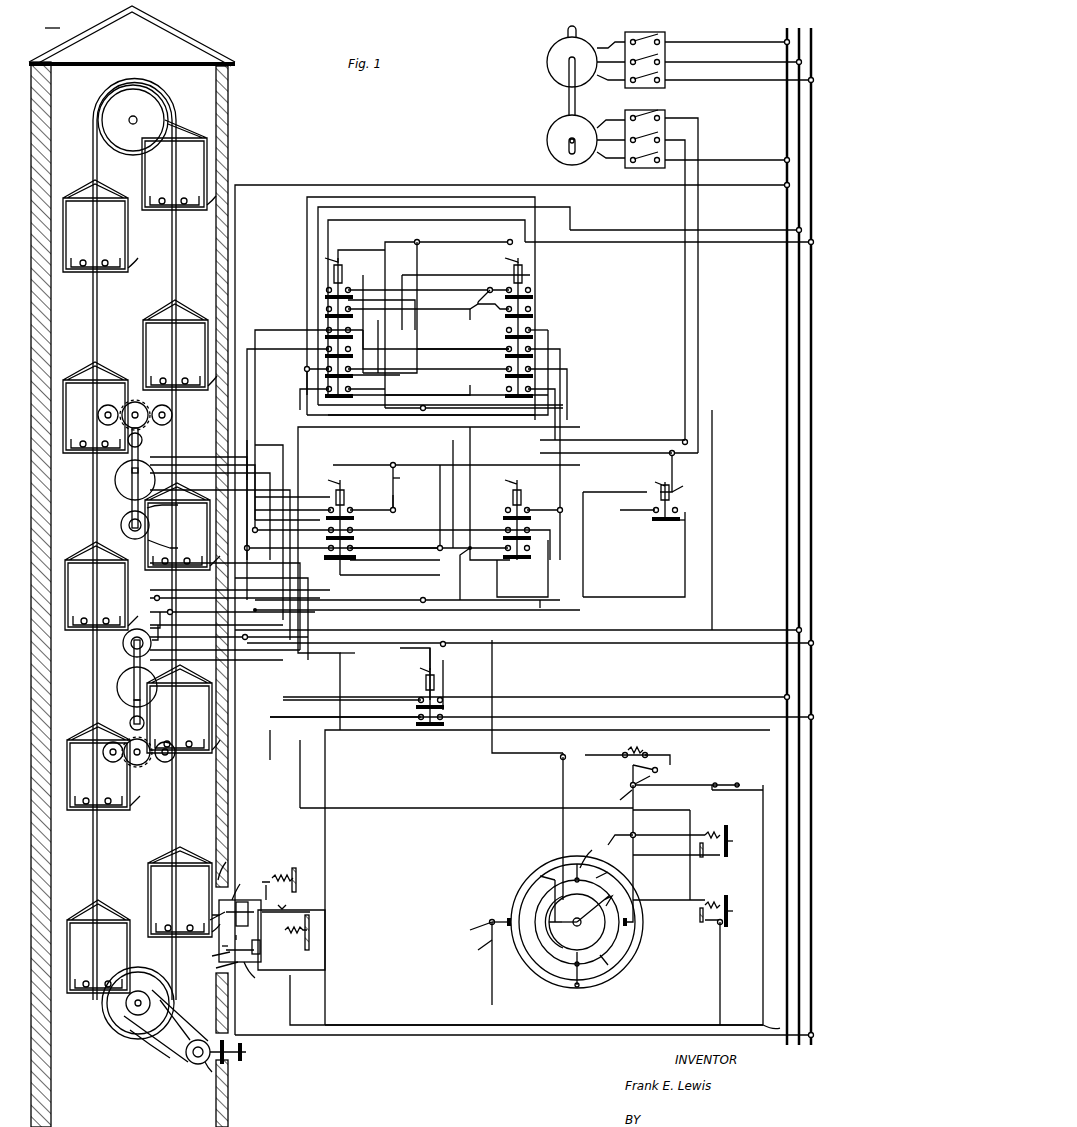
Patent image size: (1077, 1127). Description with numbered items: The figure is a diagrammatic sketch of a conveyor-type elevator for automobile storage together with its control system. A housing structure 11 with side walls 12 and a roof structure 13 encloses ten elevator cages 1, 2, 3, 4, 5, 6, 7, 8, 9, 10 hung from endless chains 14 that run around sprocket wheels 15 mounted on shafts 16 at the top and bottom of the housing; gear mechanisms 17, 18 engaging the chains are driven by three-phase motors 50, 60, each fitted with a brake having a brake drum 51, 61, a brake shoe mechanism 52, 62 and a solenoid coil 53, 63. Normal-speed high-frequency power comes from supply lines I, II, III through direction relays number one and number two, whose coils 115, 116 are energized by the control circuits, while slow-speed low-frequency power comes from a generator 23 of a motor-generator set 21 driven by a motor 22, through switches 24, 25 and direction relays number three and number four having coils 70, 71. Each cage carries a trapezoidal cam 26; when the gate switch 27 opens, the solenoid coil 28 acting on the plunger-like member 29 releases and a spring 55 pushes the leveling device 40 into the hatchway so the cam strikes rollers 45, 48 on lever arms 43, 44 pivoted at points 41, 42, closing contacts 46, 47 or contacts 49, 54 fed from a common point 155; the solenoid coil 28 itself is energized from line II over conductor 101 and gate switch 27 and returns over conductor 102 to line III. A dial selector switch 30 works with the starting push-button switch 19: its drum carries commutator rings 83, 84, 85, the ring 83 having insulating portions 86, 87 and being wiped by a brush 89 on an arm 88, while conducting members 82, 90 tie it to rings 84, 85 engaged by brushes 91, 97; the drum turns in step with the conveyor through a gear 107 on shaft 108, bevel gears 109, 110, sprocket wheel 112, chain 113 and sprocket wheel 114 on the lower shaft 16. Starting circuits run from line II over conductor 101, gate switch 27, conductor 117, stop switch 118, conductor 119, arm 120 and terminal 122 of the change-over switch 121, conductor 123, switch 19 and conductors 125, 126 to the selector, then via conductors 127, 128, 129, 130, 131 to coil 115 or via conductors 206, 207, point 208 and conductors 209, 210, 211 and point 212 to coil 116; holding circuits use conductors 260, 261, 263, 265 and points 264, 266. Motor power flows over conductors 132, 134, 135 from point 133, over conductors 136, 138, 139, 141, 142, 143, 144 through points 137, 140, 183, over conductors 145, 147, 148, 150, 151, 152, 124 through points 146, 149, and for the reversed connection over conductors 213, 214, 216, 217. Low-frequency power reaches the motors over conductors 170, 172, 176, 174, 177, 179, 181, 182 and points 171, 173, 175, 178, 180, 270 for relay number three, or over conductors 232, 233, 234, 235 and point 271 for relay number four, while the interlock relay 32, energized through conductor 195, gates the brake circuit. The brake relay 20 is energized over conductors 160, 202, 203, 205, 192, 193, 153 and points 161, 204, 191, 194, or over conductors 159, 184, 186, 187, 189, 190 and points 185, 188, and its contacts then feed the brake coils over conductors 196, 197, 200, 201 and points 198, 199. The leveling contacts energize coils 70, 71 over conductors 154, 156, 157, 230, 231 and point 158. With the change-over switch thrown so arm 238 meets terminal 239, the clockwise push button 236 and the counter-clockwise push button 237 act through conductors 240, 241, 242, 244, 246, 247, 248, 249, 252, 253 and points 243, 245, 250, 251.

The bucket 1 is at (180, 892).
The bucket 2 is at (179, 709).
The bucket 3 is at (177, 526).
The bucket 4 is at (175, 345).
The bucket 5 is at (174, 165).
The bucket 6 is at (95, 226).
The bucket 7 is at (95, 407).
The bucket 8 is at (96, 586).
The bucket 9 is at (98, 766).
The bucket 10 is at (98, 946).
The elevator structure 11 is at (51, 20).
The shaft walls 12 is at (229, 156).
The roof 13 is at (205, 48).
The conveyor cable 14 is at (177, 275).
The sprocket wheel 15 is at (160, 95).
The wheel hub 16 is at (133, 112).
The upper gear train 17 is at (135, 400).
The lower gear train 18 is at (140, 768).
The contact switch 19 is at (636, 748).
The relay 20 is at (435, 695).
The selector switch 21 is at (557, 86).
The dial 22 is at (580, 37).
The dial 23 is at (580, 115).
The switch block 24 is at (660, 32).
The switch block 25 is at (662, 110).
The bucket roller 26 is at (175, 564).
The spring 27 is at (284, 872).
The plunger 28 is at (286, 913).
The spring 29 is at (297, 933).
The indicator dial 30 is at (577, 916).
The relay 32 is at (644, 486).
The lever 40 is at (264, 890).
The arm 41 is at (215, 860).
The contact 42 is at (213, 958).
The arm 43 is at (243, 884).
The contact 44 is at (217, 970).
The trip arm 45 is at (206, 912).
The switch housing 46 is at (240, 931).
The contact 47 is at (246, 904).
The contact 48 is at (213, 946).
The contact 49 is at (265, 948).
The drum 50 is at (115, 475).
The pulley 51 is at (121, 522).
The contact 52 is at (171, 504).
The contact 53 is at (171, 547).
The contact 54 is at (257, 973).
The switch box 55 is at (291, 940).
The drum 60 is at (118, 680).
The pulley 61 is at (123, 640).
The contact 62 is at (152, 625).
The contact 63 is at (152, 612).
The relay 3 70 is at (328, 480).
The relay 4 71 is at (505, 480).
The contact 82 is at (575, 870).
The contact segment 83 is at (579, 920).
The contact segment 84 is at (604, 870).
The ring 85 is at (588, 852).
The hub 86 is at (584, 927).
The arm 87 is at (550, 901).
The arm 88 is at (577, 911).
The pointer 89 is at (612, 896).
The contact 90 is at (567, 969).
The contact 91 is at (630, 924).
The contact 97 is at (495, 915).
The wire 101 is at (770, 630).
The wire 102 is at (300, 1030).
The disc 107 is at (243, 1050).
The shaft 108 is at (230, 1046).
The bearing 109 is at (208, 1074).
The sprocket 110 is at (192, 1064).
The chain 112 is at (184, 1020).
The chain 113 is at (150, 1046).
The chain 114 is at (172, 1018).
The relay 1 115 is at (505, 258).
The relay 2 116 is at (325, 258).
The wire 117 is at (535, 907).
The contact 118 is at (730, 782).
The wire 119 is at (673, 842).
The switch arm 120 is at (652, 782).
The contact 121 is at (672, 791).
The contact 122 is at (653, 773).
The switch 123 is at (665, 752).
The wire 124 is at (216, 656).
The wire 125 is at (602, 747).
The wire 126 is at (562, 773).
The wire 127 is at (495, 950).
The wire 128 is at (466, 915).
The wire 129 is at (300, 388).
The wire 130 is at (450, 275).
The wire 131 is at (624, 256).
The wire 132 is at (330, 185).
The wire 133 is at (200, 457).
The wire 134 is at (215, 465).
The wire 135 is at (292, 496).
The wire 136 is at (760, 230).
The wire 137 is at (386, 324).
The wire 138 is at (406, 341).
The wire 139 is at (548, 335).
The wire 140 is at (247, 460).
The wire 141 is at (293, 508).
The wire 142 is at (230, 473).
The wire 143 is at (240, 588).
The wire 144 is at (225, 642).
The wire 145 is at (463, 295).
The wire 146 is at (390, 361).
The wire 147 is at (463, 340).
The wire 148 is at (555, 392).
The wire 149 is at (272, 532).
The wire 150 is at (220, 557).
The wire 151 is at (287, 518).
The wire 152 is at (271, 614).
The wire 153 is at (672, 653).
The wire 154 is at (351, 658).
The contact 155 is at (239, 940).
The wire 156 is at (270, 745).
The wire 157 is at (370, 465).
The wire 158 is at (404, 478).
The wire 159 is at (385, 440).
The wire 160 is at (383, 374).
The wire 161 is at (381, 390).
The wire 170 is at (685, 215).
The junction 171 is at (685, 440).
The wire 172 is at (605, 440).
The wire 173 is at (437, 508).
The wire 174 is at (282, 530).
The wire 175 is at (275, 548).
The wire 176 is at (395, 540).
The wire 177 is at (698, 140).
The wire 178 is at (668, 450).
The wire 179 is at (598, 452).
The wire 180 is at (450, 561).
The wire 181 is at (395, 558).
The wire 182 is at (331, 570).
The wire 183 is at (229, 630).
The wire 184 is at (407, 499).
The wire 185 is at (371, 499).
The junction 186 is at (375, 515).
The wire 187 is at (390, 576).
The wire 188 is at (545, 503).
The wire 189 is at (626, 500).
The wire 190 is at (680, 536).
The wire 191 is at (407, 600).
The wire 192 is at (411, 659).
The wire 193 is at (456, 685).
The wire 194 is at (450, 671).
The wire 195 is at (690, 475).
The wire 196 is at (760, 697).
The wire 197 is at (370, 700).
The wire 198 is at (224, 590).
The wire 199 is at (221, 606).
The wire 200 is at (372, 717).
The wire 201 is at (660, 717).
The wire 202 is at (427, 392).
The wire 203 is at (438, 376).
The wire 204 is at (474, 412).
The wire 205 is at (420, 465).
The wire 206 is at (646, 891).
The wire 207 is at (623, 653).
The wire 208 is at (567, 372).
The wire 209 is at (560, 352).
The wire 210 is at (428, 360).
The wire 211 is at (365, 250).
The wire 212 is at (419, 242).
The wire 213 is at (381, 308).
The wire 214 is at (288, 330).
The wire 216 is at (373, 339).
The wire 217 is at (290, 349).
The wire 230 is at (455, 733).
The wire 231 is at (456, 494).
The wire 232 is at (490, 498).
The wire 233 is at (583, 585).
The wire 234 is at (459, 587).
The wire 235 is at (522, 568).
The relay 236 is at (732, 836).
The relay 237 is at (732, 905).
The wire 238 is at (644, 798).
The wire 239 is at (676, 810).
The wire 240 is at (675, 827).
The wire 241 is at (691, 822).
The wire 242 is at (669, 847).
The wire 243 is at (619, 834).
The wire 244 is at (520, 808).
The wire 245 is at (465, 311).
The wire 246 is at (428, 301).
The wire 247 is at (358, 214).
The wire 248 is at (700, 890).
The wire 249 is at (720, 980).
The wire 250 is at (470, 940).
The wire 251 is at (305, 365).
The wire 252 is at (459, 320).
The wire 253 is at (535, 197).
The wire 260 is at (712, 580).
The wire 261 is at (478, 228).
The wire 263 is at (455, 290).
The wire 264 is at (472, 293).
The wire 265 is at (492, 700).
The junction 266 is at (562, 755).
The wire 270 is at (225, 603).
The wire 271 is at (280, 612).
The bus line I is at (727, 535).
The bus line II is at (733, 535).
The bus line III is at (739, 535).